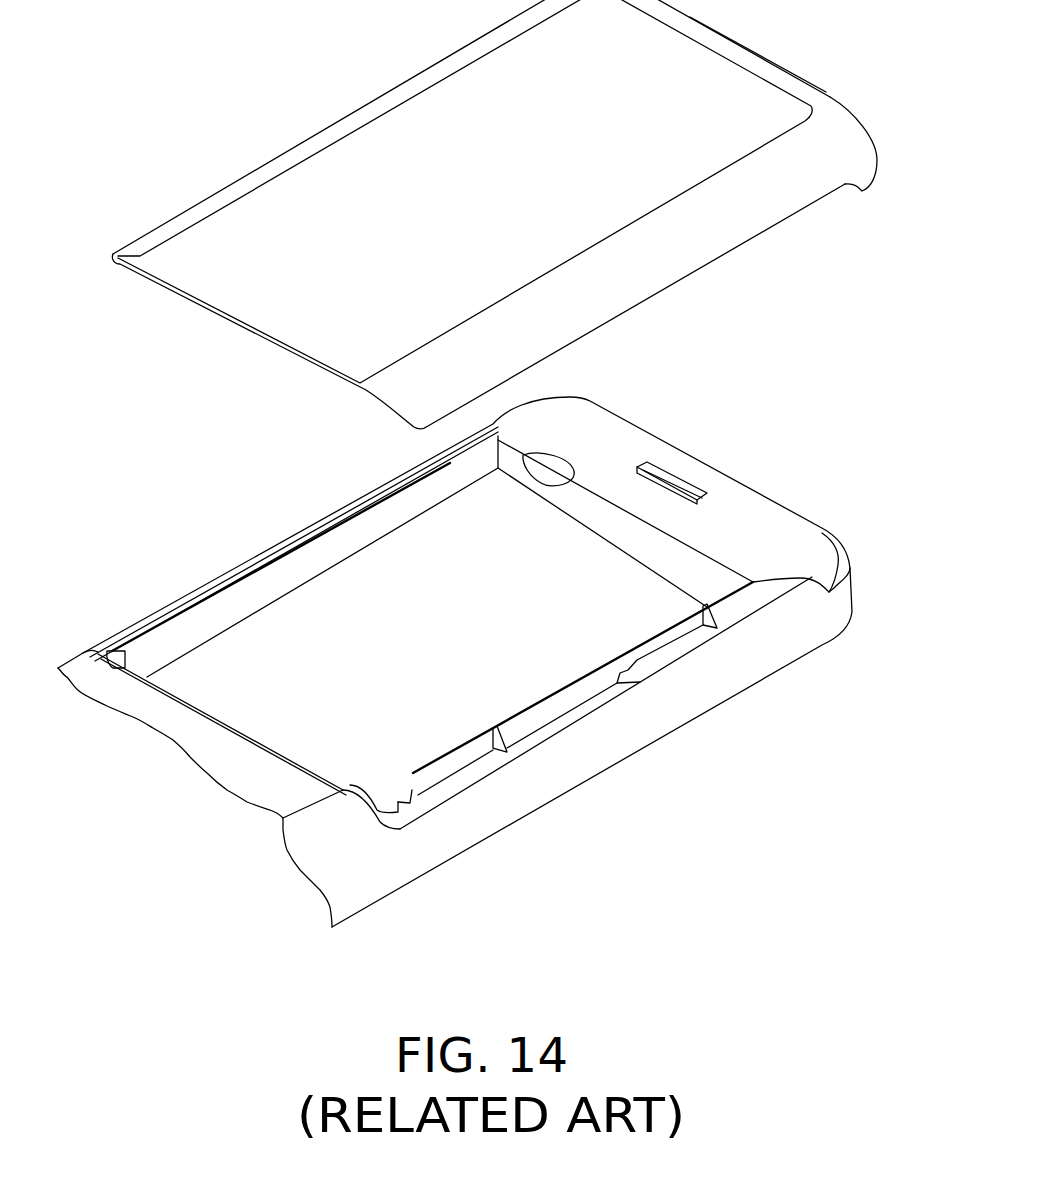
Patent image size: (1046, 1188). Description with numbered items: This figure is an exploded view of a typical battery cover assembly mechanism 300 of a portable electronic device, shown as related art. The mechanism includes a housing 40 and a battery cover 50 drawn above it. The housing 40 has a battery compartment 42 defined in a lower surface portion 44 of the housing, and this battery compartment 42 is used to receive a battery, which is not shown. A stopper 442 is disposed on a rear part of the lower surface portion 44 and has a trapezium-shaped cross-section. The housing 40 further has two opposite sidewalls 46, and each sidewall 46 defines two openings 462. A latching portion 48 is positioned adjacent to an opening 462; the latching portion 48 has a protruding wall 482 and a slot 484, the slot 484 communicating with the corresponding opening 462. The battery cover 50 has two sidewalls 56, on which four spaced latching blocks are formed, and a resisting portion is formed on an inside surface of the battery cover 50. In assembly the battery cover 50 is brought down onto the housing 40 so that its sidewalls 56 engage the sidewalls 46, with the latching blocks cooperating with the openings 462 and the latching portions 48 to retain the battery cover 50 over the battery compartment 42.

The battery cover assembly mechanism 300 is at (868, 287).
The battery cover 50 is at (739, 268).
The sidewall of battery cover 56 is at (810, 160).
The housing 40 is at (786, 490).
The battery compartment 42 is at (328, 596).
The lower surface portion 44 is at (603, 426).
The stopper 442 is at (670, 475).
The sidewall 46 is at (375, 518).
The opening 462 is at (683, 646).
The latching portion 48 is at (593, 830).
The protruding wall 482 is at (413, 792).
The slot 484 is at (410, 803).